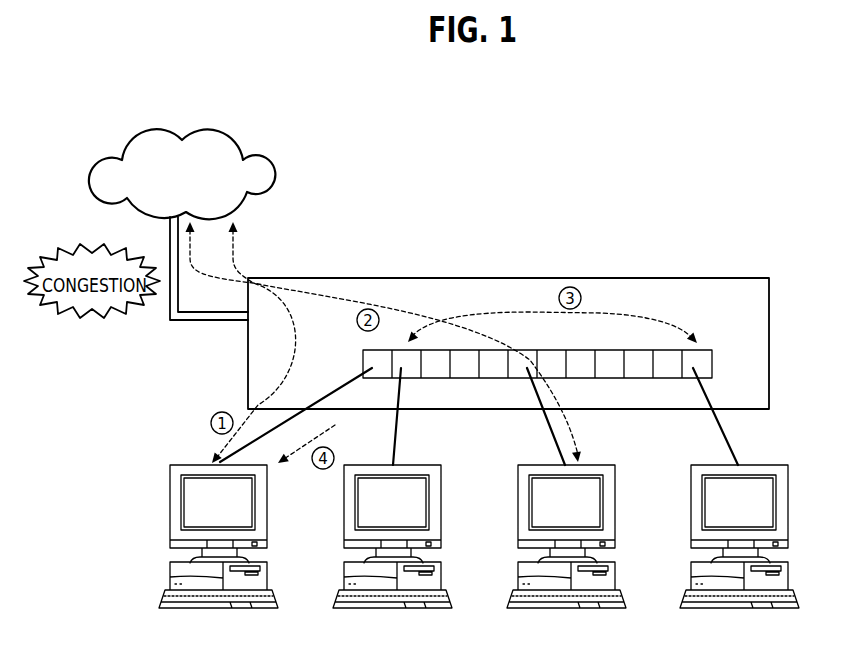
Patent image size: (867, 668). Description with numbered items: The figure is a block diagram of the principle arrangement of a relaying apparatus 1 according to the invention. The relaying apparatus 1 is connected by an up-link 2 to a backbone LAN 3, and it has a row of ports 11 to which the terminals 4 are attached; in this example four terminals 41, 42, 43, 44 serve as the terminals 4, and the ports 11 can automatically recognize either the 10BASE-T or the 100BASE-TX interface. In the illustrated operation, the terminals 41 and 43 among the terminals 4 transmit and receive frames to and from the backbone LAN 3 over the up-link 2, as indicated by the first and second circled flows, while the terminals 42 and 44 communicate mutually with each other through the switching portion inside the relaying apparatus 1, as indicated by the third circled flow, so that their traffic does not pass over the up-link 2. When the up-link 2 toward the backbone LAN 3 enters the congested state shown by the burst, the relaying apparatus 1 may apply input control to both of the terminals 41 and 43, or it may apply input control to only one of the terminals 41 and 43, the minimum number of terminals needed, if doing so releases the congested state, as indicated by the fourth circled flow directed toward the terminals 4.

The relaying apparatus 1 is at (370, 277).
The up-link 2 is at (188, 321).
The backbone LAN 3 is at (277, 178).
The terminals 4 is at (149, 513).
The ports 11 is at (712, 368).
The terminal 41 is at (218, 557).
The terminal 42 is at (392, 557).
The terminal 43 is at (566, 557).
The terminal 44 is at (739, 557).